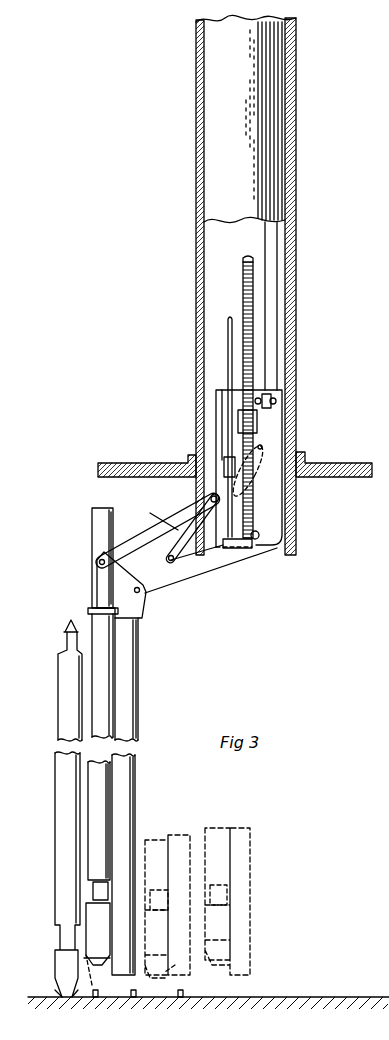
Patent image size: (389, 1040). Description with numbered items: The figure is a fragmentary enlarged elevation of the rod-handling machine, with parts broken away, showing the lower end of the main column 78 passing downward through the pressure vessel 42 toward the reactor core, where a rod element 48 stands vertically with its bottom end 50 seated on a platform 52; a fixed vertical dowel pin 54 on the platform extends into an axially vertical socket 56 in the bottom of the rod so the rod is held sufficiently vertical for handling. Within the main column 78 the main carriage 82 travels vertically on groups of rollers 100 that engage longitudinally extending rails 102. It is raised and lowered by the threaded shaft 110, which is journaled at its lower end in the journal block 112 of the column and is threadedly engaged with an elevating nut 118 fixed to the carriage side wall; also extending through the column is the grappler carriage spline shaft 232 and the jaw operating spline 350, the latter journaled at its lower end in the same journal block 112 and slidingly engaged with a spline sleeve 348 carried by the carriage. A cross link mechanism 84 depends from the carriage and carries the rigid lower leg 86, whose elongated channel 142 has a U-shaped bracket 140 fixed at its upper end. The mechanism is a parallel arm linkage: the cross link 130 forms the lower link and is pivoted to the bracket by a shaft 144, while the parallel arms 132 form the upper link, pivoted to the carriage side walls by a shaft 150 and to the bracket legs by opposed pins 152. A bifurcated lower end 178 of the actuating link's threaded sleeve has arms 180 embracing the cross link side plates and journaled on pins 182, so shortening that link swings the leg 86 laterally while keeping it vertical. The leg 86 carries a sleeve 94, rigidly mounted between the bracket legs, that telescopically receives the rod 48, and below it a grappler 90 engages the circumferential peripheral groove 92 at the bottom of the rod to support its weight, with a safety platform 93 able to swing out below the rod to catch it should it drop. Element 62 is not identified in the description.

The mast tube 62 is at (297, 129).
The main column 78 is at (283, 170).
The rails 102 is at (272, 297).
The threaded shaft 110 is at (255, 325).
The grappler carriage spline shaft 232 is at (255, 268).
The jaw operating spline 350 is at (230, 346).
The groups of rollers 100 is at (283, 393).
The elevating nut 118 is at (256, 420).
The main carriage 82 is at (273, 447).
The pressure vessel 42 is at (108, 463).
The spline sleeve 348 is at (224, 465).
The shaft 150 is at (211, 497).
The sleeve 94 is at (92, 528).
The parallel arms 132 is at (133, 545).
The bifurcated lower end 178 is at (155, 512).
The arms 180 is at (190, 540).
The pins 152 is at (100, 563).
The U-shaped bracket 140 is at (112, 586).
The pins 182 is at (171, 562).
The cross link 130 is at (188, 584).
The cross link mechanism 84 is at (215, 576).
The journal block 112 is at (238, 548).
The shaft 144 is at (138, 593).
The rod element 48 is at (93, 680).
The channel 142 is at (138, 680).
The leg 86 is at (147, 729).
The grappler 90 is at (95, 890).
The circumferential peripheral groove 92 is at (62, 940).
The bottom end 50 is at (55, 997).
The platform 52 is at (272, 997).
The socket 56 is at (73, 995).
The safety platform 93 is at (92, 985).
The dowel pin 54 is at (100, 995).